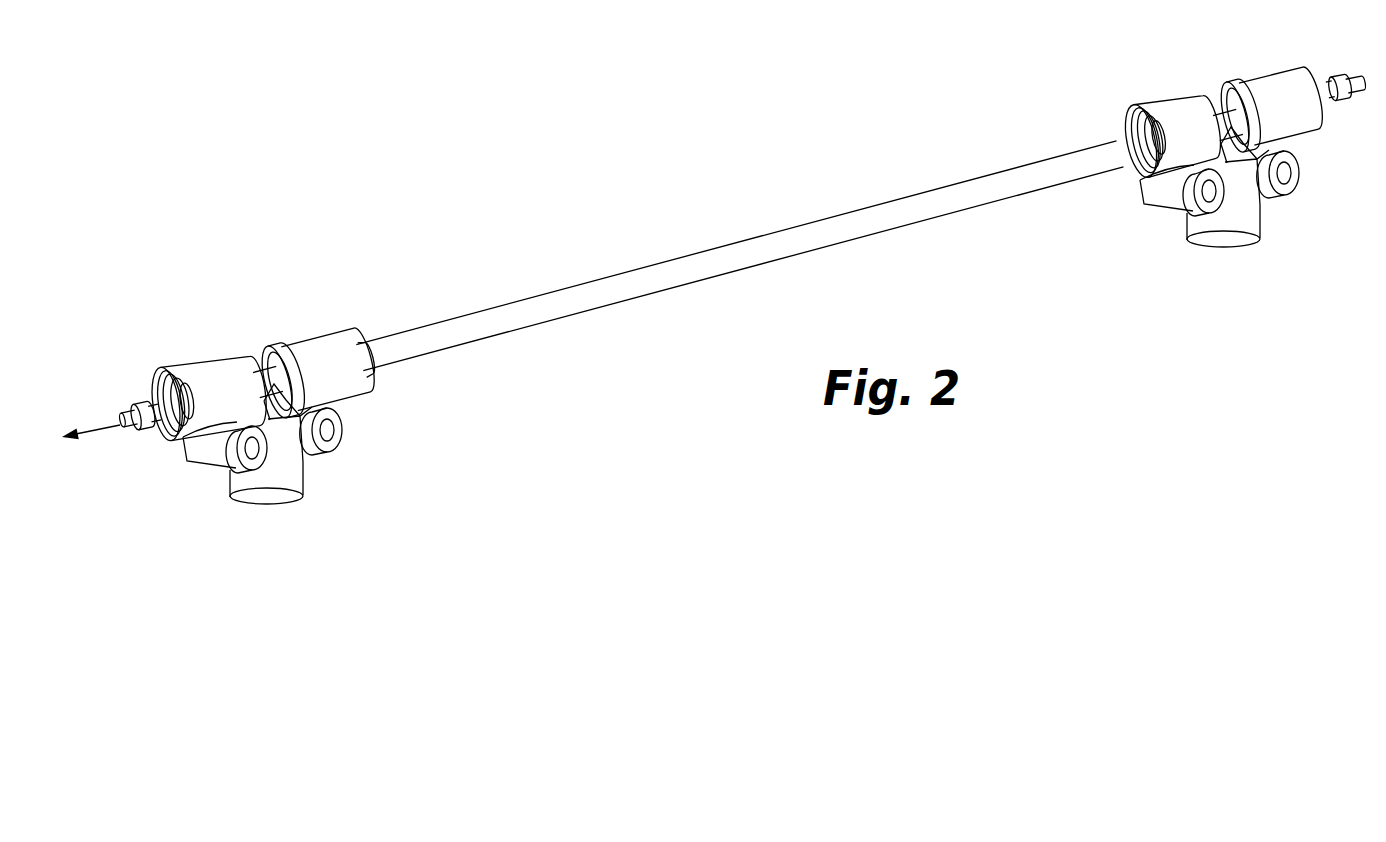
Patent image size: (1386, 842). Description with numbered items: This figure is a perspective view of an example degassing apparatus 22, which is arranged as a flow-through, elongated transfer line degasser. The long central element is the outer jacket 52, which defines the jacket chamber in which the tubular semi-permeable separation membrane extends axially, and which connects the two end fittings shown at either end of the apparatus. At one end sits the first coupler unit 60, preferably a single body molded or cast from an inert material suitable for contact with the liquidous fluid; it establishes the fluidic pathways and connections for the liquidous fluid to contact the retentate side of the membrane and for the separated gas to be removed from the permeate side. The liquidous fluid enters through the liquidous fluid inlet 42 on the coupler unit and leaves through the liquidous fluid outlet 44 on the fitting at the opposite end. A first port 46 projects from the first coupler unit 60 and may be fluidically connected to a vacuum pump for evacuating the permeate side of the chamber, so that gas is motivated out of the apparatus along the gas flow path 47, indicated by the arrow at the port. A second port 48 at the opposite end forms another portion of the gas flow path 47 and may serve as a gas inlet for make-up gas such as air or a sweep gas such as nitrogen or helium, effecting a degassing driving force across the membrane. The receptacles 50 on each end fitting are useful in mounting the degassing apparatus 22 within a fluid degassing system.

The degassing apparatus 22 is at (619, 142).
The liquidous fluid inlet 42 is at (280, 500).
The liquidous fluid outlet 44 is at (1228, 245).
The first port 46 is at (122, 419).
The gas flow path 47 is at (96, 430).
The second port 48 is at (1360, 86).
The receptacles 50 is at (254, 450).
The outer jacket 52 is at (482, 322).
The first coupler unit 60 is at (246, 326).